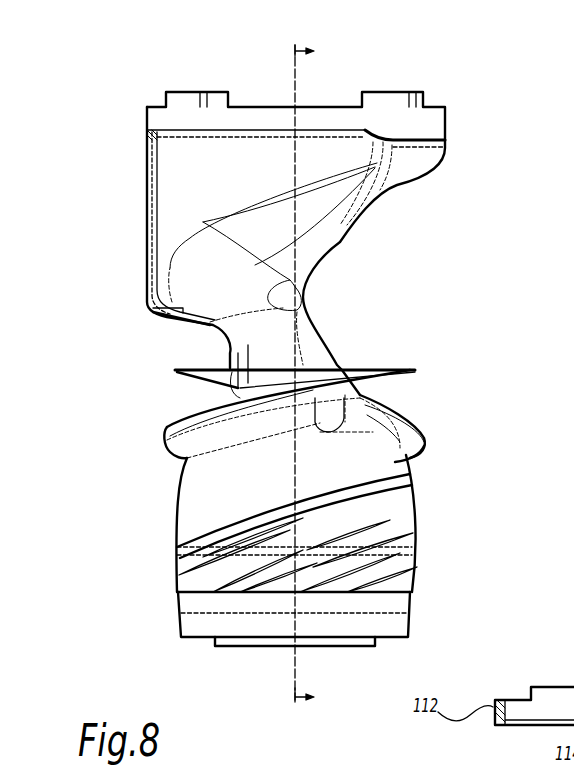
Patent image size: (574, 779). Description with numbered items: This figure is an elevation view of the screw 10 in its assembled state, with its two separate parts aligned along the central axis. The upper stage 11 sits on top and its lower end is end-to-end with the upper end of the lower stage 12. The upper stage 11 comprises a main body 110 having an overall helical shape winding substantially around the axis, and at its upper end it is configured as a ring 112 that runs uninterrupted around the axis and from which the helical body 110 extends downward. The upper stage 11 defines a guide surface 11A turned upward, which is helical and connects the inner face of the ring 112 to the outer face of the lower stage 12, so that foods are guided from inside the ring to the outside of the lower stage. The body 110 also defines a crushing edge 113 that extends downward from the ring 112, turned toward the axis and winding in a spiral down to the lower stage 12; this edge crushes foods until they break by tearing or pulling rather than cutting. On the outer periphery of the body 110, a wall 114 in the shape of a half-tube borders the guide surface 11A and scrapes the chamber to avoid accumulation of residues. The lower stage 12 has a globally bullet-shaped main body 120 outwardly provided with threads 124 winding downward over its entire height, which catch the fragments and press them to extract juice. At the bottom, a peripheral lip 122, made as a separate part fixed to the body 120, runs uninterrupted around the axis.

The screw 10 is at (128, 81).
The upper stage 11 is at (296, 243).
The guide surface 11A is at (228, 280).
The main body 110 is at (172, 326).
The ring 112 is at (422, 128).
The crushing edge 113 is at (333, 240).
The wall 114 is at (207, 187).
The lower stage 12 is at (278, 508).
The main body 120 is at (180, 497).
The peripheral lip 122 is at (178, 622).
The threads 124 is at (428, 447).